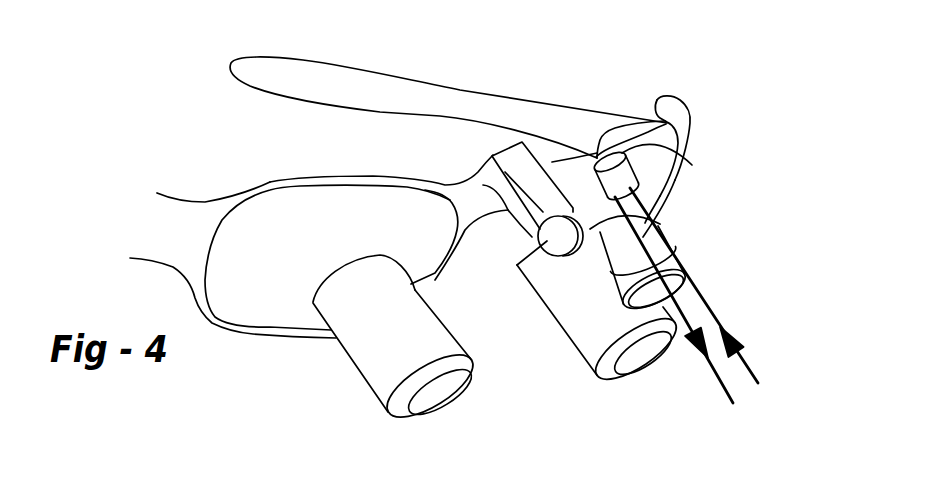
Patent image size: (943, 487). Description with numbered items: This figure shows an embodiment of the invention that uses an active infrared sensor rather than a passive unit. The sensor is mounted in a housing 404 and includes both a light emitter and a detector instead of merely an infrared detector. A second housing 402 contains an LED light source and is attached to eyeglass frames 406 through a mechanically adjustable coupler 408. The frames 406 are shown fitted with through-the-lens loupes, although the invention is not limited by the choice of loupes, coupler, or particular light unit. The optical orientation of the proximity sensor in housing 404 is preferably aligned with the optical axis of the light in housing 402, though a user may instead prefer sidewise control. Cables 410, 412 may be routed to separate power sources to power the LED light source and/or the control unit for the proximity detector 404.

The housing 402 is at (670, 245).
The housing 404 is at (686, 152).
The eyeglass frames 406 is at (300, 181).
The mechanically adjustable coupler 408 is at (508, 155).
The cable 410 is at (683, 111).
The cable 412 is at (625, 124).